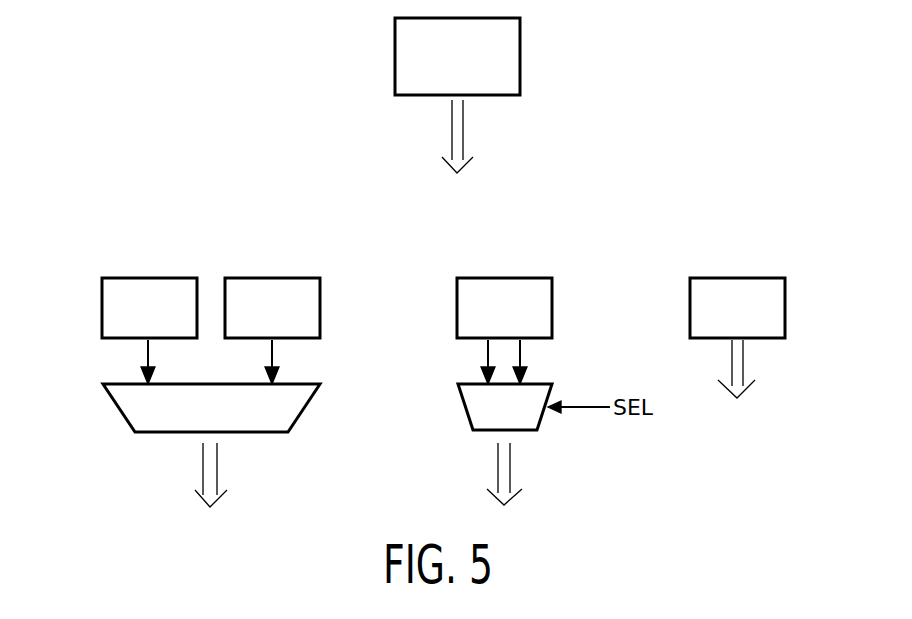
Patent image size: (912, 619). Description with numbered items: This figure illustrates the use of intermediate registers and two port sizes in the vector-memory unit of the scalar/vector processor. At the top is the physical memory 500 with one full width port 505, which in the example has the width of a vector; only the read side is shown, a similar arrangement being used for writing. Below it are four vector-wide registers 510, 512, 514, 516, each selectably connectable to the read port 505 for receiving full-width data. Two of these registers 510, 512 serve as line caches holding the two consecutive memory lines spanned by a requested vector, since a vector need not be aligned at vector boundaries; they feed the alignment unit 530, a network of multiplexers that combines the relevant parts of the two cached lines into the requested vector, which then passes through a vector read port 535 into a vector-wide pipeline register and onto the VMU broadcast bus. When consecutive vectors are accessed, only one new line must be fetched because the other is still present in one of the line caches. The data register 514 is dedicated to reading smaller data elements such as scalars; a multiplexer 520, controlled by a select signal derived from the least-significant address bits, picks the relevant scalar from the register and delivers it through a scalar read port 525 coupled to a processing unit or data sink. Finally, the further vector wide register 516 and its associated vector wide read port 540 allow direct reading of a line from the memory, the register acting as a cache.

The physical memory 500 is at (393, 60).
The full width port 505 is at (448, 138).
The register 510 is at (150, 277).
The register 512 is at (275, 277).
The data register 514 is at (522, 277).
The vector wide register 516 is at (740, 277).
The multiplexer 520 is at (470, 407).
The read port 525 is at (493, 473).
The alignment unit 530 is at (117, 407).
The vector read port 535 is at (198, 473).
The vector wide read port 540 is at (752, 365).